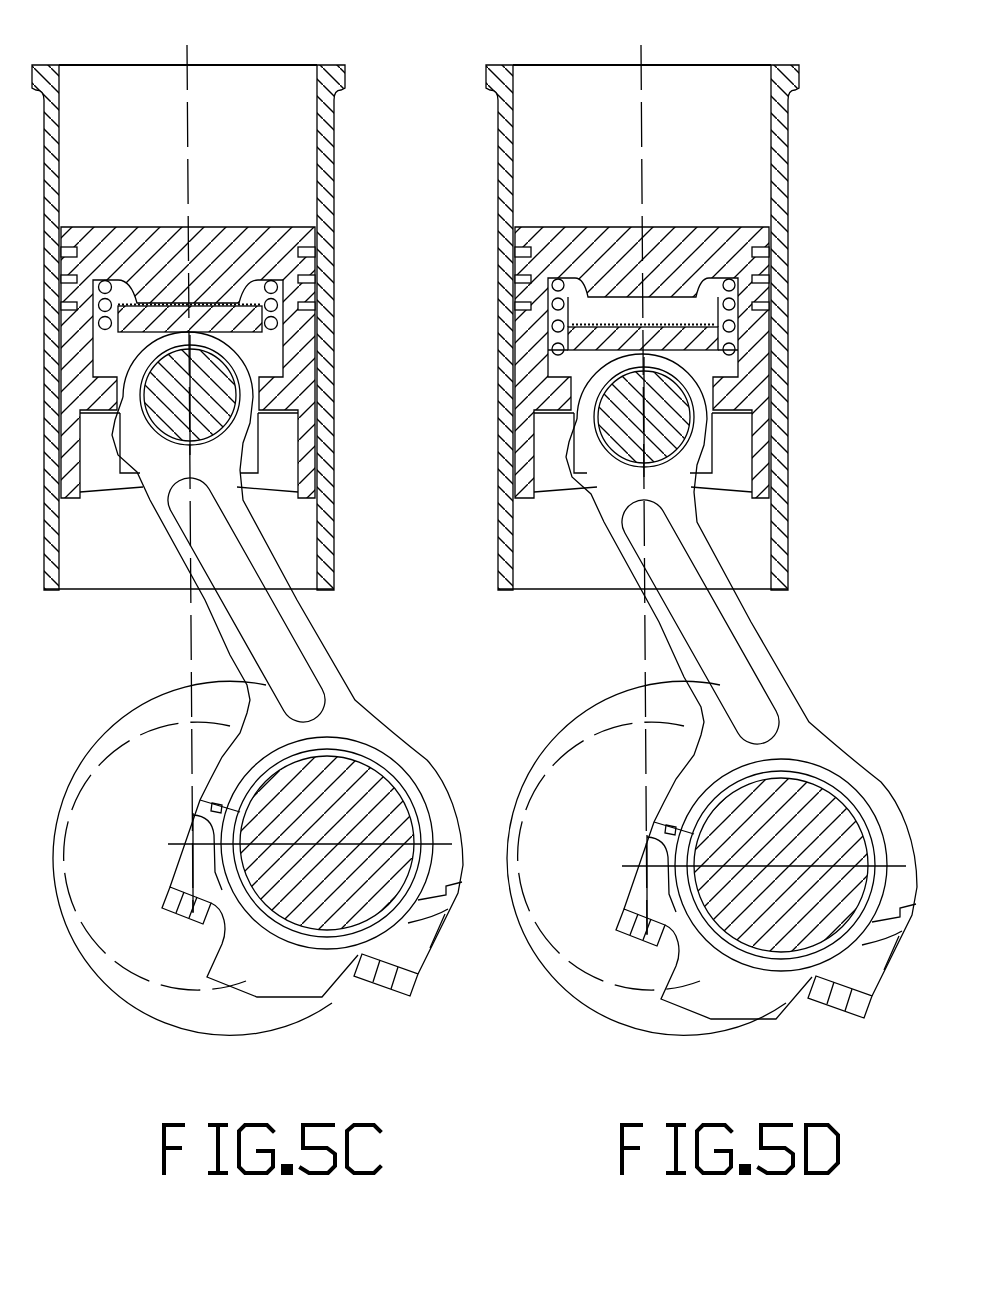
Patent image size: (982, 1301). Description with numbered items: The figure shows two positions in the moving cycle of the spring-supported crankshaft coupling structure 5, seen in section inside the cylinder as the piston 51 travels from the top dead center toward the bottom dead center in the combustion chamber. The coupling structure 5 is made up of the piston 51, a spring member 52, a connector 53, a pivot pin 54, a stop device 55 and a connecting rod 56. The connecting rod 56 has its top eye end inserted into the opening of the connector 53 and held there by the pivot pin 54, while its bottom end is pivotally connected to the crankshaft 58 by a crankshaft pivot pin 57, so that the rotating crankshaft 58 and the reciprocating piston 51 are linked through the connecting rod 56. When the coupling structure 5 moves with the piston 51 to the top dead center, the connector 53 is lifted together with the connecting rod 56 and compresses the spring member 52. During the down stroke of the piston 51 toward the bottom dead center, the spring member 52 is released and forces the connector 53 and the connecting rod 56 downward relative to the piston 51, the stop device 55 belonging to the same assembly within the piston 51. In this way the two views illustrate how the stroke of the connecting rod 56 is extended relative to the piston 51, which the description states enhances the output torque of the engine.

In FIG. 5C, the spring-supported crankshaft coupling structure 5 is at (354, 202).
In FIG. 5D, the spring-supported crankshaft coupling structure 5 is at (800, 202).
In FIG. 5C, the piston 51 is at (241, 240).
In FIG. 5D, the piston 51 is at (678, 237).
In FIG. 5C, the spring member 52 is at (295, 288).
In FIG. 5D, the spring member 52 is at (554, 277).
In FIG. 5C, the connector 53 is at (250, 347).
In FIG. 5D, the connector 53 is at (710, 370).
In FIG. 5C, the pivot pin 54 is at (213, 424).
In FIG. 5D, the pivot pin 54 is at (683, 437).
In FIG. 5C, the stop device 55 is at (117, 397).
In FIG. 5D, the stop device 55 is at (712, 417).
In FIG. 5C, the connecting rod 56 is at (310, 650).
In FIG. 5D, the connecting rod 56 is at (762, 670).
In FIG. 5C, the crankshaft pivot pin 57 is at (350, 808).
In FIG. 5D, the crankshaft pivot pin 57 is at (747, 827).
In FIG. 5C, the crankshaft 58 is at (263, 973).
In FIG. 5D, the crankshaft 58 is at (737, 982).